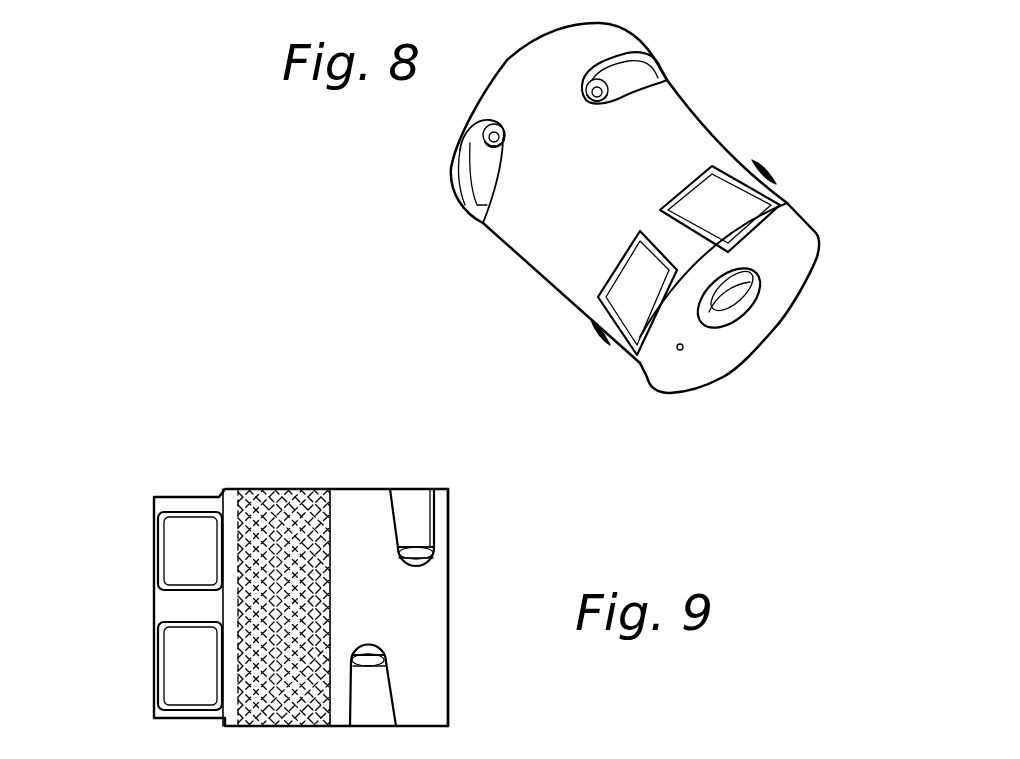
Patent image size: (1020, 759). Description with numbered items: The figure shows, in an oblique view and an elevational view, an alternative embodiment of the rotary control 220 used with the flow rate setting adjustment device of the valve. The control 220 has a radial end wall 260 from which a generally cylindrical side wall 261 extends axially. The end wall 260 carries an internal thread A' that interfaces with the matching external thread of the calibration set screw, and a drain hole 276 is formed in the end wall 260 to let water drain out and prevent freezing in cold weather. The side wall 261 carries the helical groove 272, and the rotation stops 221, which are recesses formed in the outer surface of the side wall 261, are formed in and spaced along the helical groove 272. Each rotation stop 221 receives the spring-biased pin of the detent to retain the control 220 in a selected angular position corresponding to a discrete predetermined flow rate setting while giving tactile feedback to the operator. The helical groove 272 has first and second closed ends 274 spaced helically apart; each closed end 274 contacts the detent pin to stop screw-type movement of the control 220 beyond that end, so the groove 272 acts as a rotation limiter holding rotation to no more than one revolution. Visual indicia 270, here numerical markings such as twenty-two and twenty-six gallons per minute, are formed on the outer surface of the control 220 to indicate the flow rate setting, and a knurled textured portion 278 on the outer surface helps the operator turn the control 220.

In FIG. 8, the rotary control 220 is at (748, 88).
In FIG. 9, the rotary control 220 is at (478, 502).
In FIG. 8, the rotation stops 221 is at (600, 62).
In FIG. 9, the rotation stops 221 is at (385, 673).
In FIG. 8, the end wall 260 is at (741, 345).
In FIG. 9, the end wall 260 is at (448, 672).
In FIG. 8, the side wall 261 is at (547, 272).
In FIG. 9, the side wall 261 is at (353, 497).
In FIG. 8, the visual indicia 270 is at (687, 178).
In FIG. 9, the visual indicia 270 is at (156, 660).
In FIG. 8, the helical groove 272 is at (463, 178).
In FIG. 9, the helical groove 272 is at (407, 500).
In FIG. 8, the closed ends 274 is at (595, 102).
In FIG. 9, the closed ends 274 is at (407, 563).
In FIG. 8, the drain hole 276 is at (683, 349).
In FIG. 9, the textured portion 278 is at (273, 488).
In FIG. 8, the internal thread A' is at (765, 298).